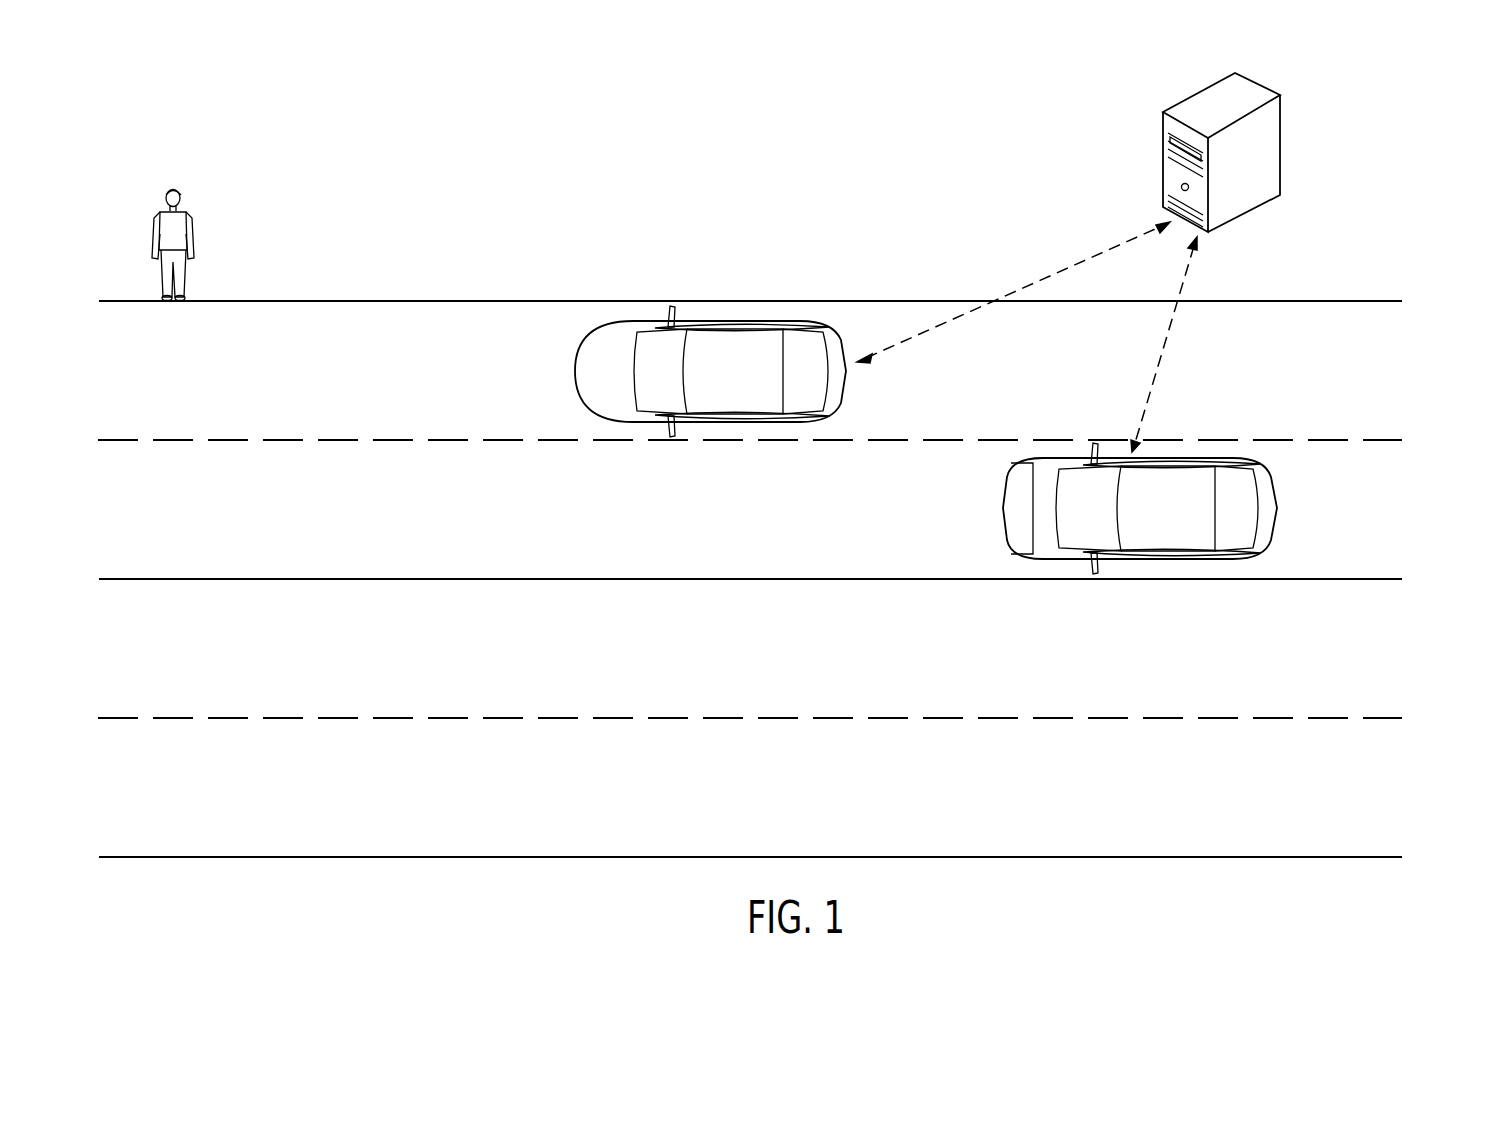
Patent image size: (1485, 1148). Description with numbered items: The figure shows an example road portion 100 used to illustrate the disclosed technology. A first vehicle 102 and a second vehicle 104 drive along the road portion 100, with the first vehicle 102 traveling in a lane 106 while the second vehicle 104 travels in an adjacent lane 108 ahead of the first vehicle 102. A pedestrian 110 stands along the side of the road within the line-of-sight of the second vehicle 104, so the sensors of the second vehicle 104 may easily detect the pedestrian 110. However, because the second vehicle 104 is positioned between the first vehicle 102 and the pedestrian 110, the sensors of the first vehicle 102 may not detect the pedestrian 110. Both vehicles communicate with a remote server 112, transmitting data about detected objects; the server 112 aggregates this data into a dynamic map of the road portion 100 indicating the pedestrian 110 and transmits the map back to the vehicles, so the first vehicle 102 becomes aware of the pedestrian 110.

The road portion 100 is at (236, 174).
The first vehicle 102 is at (1170, 563).
The second vehicle 104 is at (725, 422).
The lane 106 is at (1395, 512).
The adjacent lane 108 is at (1395, 372).
The pedestrian 110 is at (191, 222).
The server 112 is at (1283, 142).